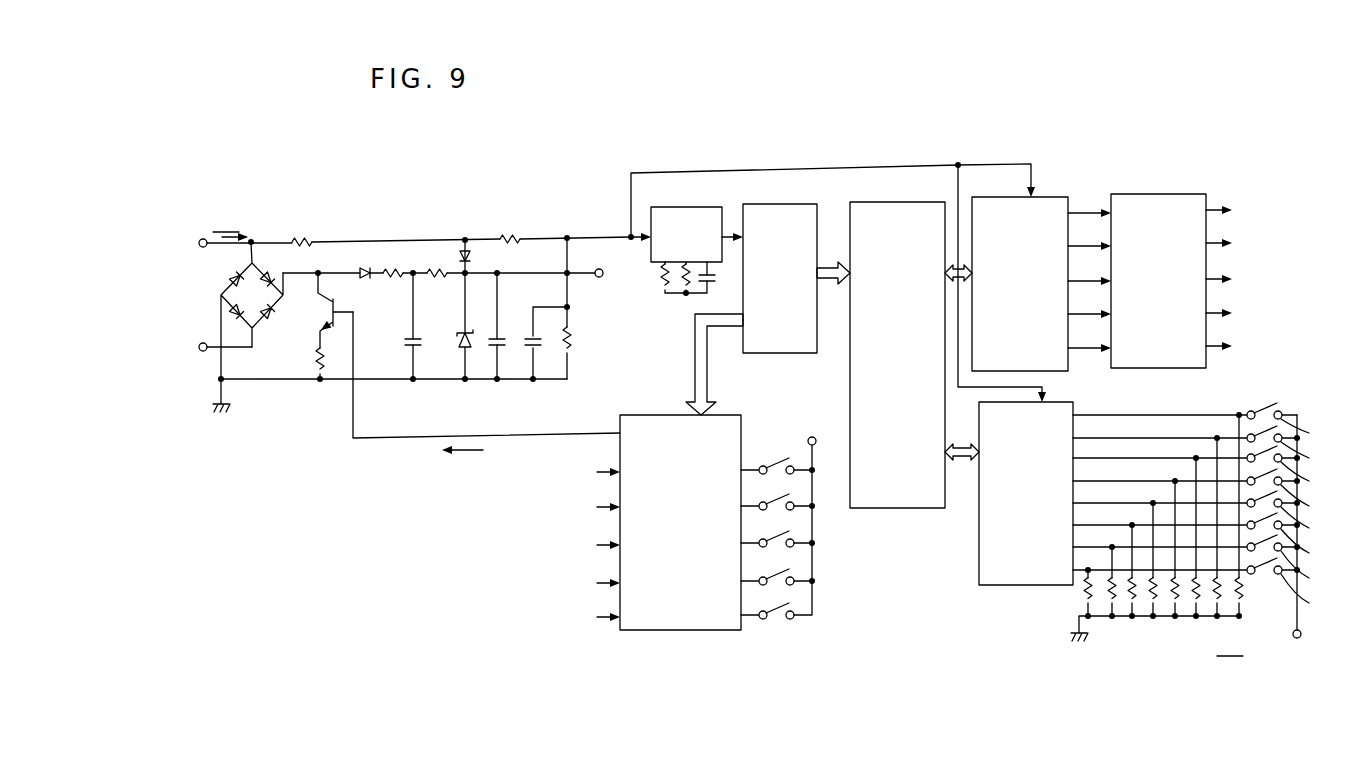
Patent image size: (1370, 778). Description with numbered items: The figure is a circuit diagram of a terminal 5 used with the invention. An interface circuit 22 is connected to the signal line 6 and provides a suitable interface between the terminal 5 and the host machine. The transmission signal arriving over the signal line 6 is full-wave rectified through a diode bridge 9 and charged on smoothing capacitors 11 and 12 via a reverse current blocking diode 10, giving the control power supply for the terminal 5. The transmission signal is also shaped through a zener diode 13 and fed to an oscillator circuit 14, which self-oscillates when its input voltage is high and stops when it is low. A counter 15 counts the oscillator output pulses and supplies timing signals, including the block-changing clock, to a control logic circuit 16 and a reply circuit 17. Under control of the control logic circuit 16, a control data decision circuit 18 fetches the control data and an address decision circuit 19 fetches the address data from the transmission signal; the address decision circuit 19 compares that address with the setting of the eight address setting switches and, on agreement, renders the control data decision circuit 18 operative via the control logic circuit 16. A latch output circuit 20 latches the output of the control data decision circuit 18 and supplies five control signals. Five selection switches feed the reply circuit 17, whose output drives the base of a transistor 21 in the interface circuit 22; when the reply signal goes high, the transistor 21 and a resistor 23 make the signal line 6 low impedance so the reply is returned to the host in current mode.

The terminal 5 is at (425, 603).
The signal line 6 is at (193, 245).
The diode bridge 9 is at (252, 286).
The reverse current blocking diode 10 is at (370, 270).
The smoothing capacitor 11 is at (402, 350).
The smoothing capacitor 12 is at (506, 350).
The zener diode 13 is at (470, 350).
The oscillator circuit 14 is at (693, 207).
The counter 15 is at (790, 204).
The control logic circuit 16 is at (910, 210).
The reply circuit 17 is at (725, 620).
The control data decision circuit 18 is at (1048, 206).
The address decision circuit 19 is at (1015, 584).
The latch output circuit 20 is at (1150, 196).
The transistor 21 is at (318, 314).
The interface circuit 22 is at (452, 212).
The resistor 23 is at (310, 372).